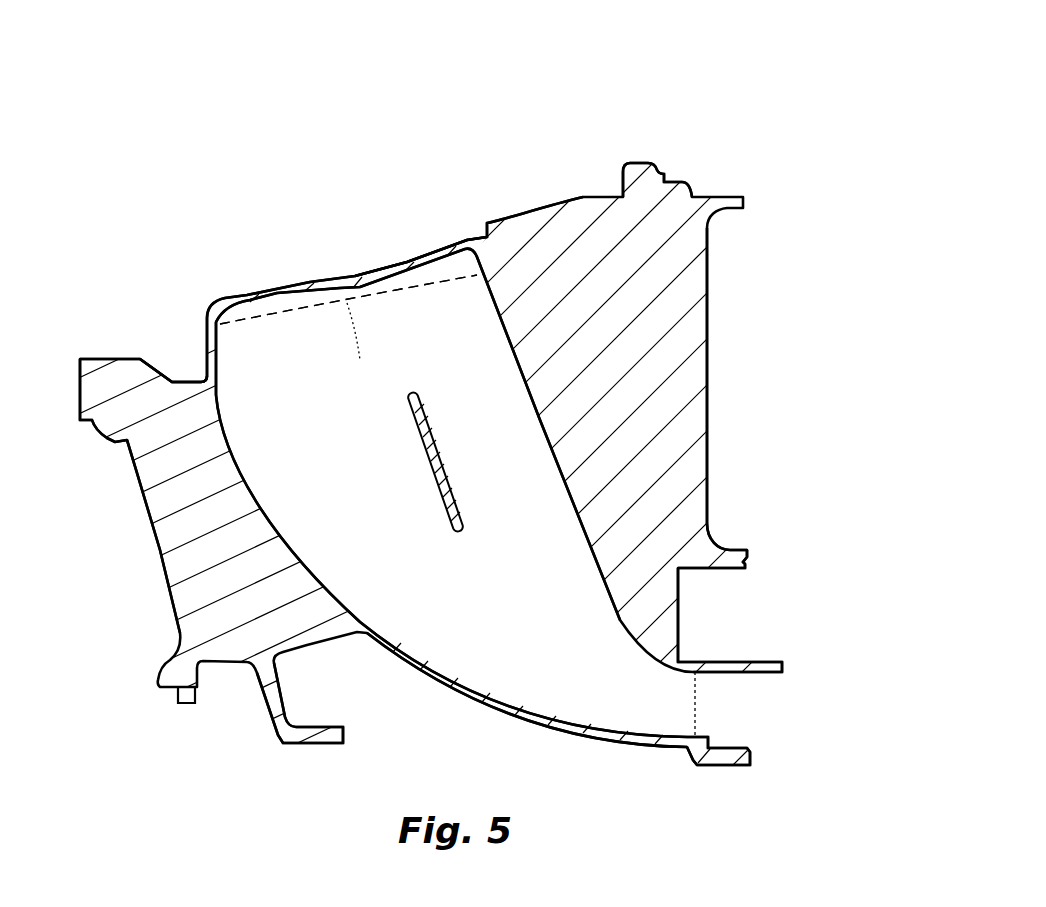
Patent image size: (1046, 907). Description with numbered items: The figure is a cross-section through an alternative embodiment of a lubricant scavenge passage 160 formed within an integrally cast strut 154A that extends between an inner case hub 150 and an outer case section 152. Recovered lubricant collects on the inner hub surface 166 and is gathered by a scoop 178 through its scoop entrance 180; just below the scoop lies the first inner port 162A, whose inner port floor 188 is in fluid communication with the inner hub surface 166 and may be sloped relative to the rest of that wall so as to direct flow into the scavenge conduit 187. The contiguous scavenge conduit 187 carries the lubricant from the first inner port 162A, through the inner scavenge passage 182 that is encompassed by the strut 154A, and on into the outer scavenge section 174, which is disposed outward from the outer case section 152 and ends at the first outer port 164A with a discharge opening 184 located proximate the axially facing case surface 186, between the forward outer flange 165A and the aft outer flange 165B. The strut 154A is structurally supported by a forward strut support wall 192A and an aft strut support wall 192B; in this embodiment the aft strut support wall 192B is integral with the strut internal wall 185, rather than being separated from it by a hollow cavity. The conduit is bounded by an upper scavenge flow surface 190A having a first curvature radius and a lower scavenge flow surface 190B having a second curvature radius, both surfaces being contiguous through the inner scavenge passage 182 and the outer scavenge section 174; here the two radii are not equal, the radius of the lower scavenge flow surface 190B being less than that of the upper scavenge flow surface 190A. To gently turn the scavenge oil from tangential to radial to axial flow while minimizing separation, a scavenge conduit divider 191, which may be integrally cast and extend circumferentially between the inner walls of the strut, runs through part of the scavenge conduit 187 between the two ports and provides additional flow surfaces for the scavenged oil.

The inner case hub 150 is at (512, 181).
The outer case section 152 is at (725, 534).
The integrally cast strut 154A is at (636, 89).
The lubricant scavenge passage 160 is at (146, 287).
The first inner port 162A is at (272, 276).
The first outer port 164A is at (759, 755).
The forward outer flange 165A is at (281, 744).
The aft outer flange 165B is at (737, 630).
The inner hub surface 166 is at (182, 373).
The outer scavenge section 174 is at (517, 734).
The scoop 178 is at (376, 276).
The scoop entrance 180 is at (430, 251).
The inner scavenge passage 182 is at (536, 390).
The discharge opening 184 is at (710, 703).
The strut internal wall 185 is at (513, 360).
The axially facing case surface 186 is at (762, 567).
The scavenge conduit 187 is at (481, 623).
The inner port floor 188 is at (355, 344).
The upper scavenge flow surface 190A is at (250, 490).
The lower scavenge flow surface 190B is at (571, 722).
The scavenge conduit divider 191 is at (462, 525).
The forward strut support wall 192A is at (135, 552).
The aft strut support wall 192B is at (722, 420).